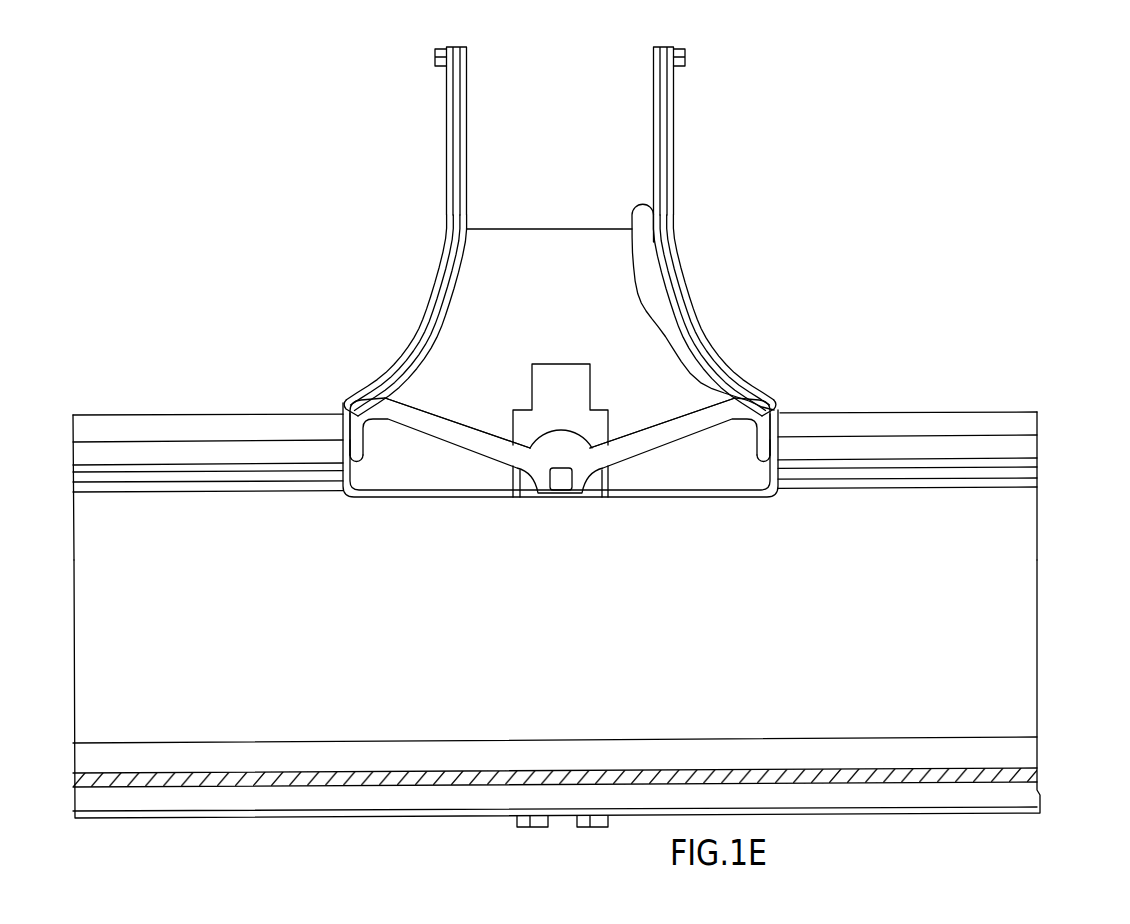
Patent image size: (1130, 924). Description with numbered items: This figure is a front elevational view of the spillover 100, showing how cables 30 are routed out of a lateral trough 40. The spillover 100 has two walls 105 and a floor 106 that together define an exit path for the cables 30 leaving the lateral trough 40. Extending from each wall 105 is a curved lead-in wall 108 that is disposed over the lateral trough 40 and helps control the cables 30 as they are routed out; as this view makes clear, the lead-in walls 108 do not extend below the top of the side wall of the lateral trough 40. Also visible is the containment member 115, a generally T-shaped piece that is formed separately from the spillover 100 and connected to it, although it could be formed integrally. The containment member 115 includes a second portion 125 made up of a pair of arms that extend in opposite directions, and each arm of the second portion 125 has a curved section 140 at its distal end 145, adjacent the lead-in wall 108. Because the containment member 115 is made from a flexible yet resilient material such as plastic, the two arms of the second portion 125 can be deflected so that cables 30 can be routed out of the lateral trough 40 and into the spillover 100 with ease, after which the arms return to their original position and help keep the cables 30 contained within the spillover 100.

The cables 30 is at (857, 427).
The lateral trough 40 is at (937, 700).
The spillover 100 is at (708, 231).
The walls 105 is at (447, 140).
The floor 106 is at (503, 332).
The curved lead-in wall 108 is at (433, 306).
The containment member 115 is at (560, 522).
The second portion 125 is at (487, 457).
The curved section 140 is at (385, 420).
The distal end 145 is at (356, 478).